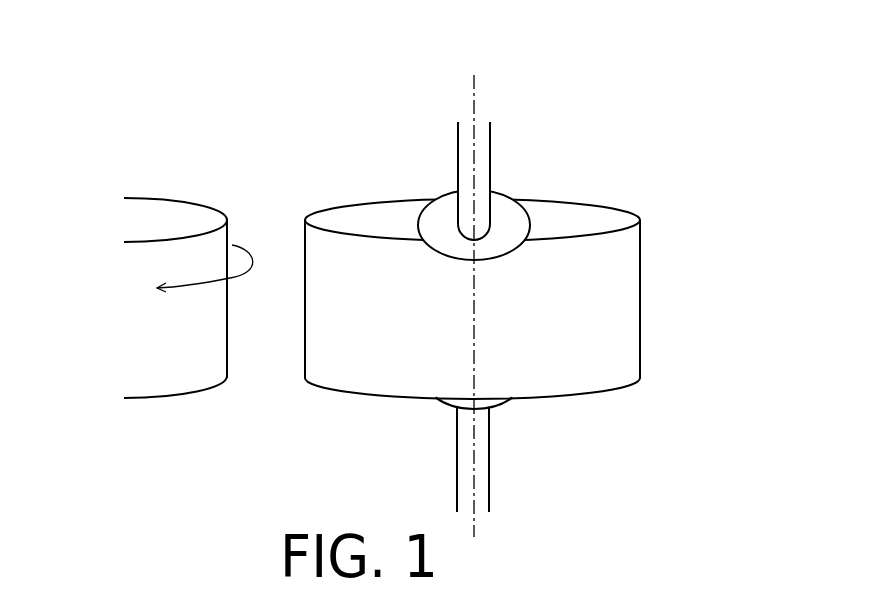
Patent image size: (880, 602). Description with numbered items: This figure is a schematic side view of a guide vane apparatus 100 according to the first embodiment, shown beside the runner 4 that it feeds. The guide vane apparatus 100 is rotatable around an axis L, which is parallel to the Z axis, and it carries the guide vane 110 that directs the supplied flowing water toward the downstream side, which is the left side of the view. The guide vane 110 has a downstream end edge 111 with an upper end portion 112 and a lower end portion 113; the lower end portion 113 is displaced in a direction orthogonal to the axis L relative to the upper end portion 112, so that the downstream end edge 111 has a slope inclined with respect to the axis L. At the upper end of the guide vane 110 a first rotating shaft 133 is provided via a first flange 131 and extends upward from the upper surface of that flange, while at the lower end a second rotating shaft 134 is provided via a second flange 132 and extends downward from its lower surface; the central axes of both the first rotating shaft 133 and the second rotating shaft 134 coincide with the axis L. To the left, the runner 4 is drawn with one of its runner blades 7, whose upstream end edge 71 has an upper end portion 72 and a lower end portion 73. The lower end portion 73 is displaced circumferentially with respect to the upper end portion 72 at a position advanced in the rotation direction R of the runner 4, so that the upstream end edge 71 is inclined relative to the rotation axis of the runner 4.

The runner 4 is at (181, 288).
The runner blade 7 is at (146, 309).
The upstream end edge 71 is at (230, 297).
The upper end portion 72 is at (227, 218).
The lower end portion 73 is at (227, 378).
The guide vane apparatus 100 is at (491, 277).
The guide vane 110 is at (438, 302).
The downstream end edge 111 is at (302, 270).
The upper end portion 112 is at (305, 218).
The lower end portion 113 is at (305, 378).
The first flange 131 is at (526, 211).
The second flange 132 is at (447, 407).
The first rotating shaft 133 is at (491, 158).
The second rotating shaft 134 is at (491, 470).
The axis L is at (476, 83).
The rotation direction R is at (205, 268).